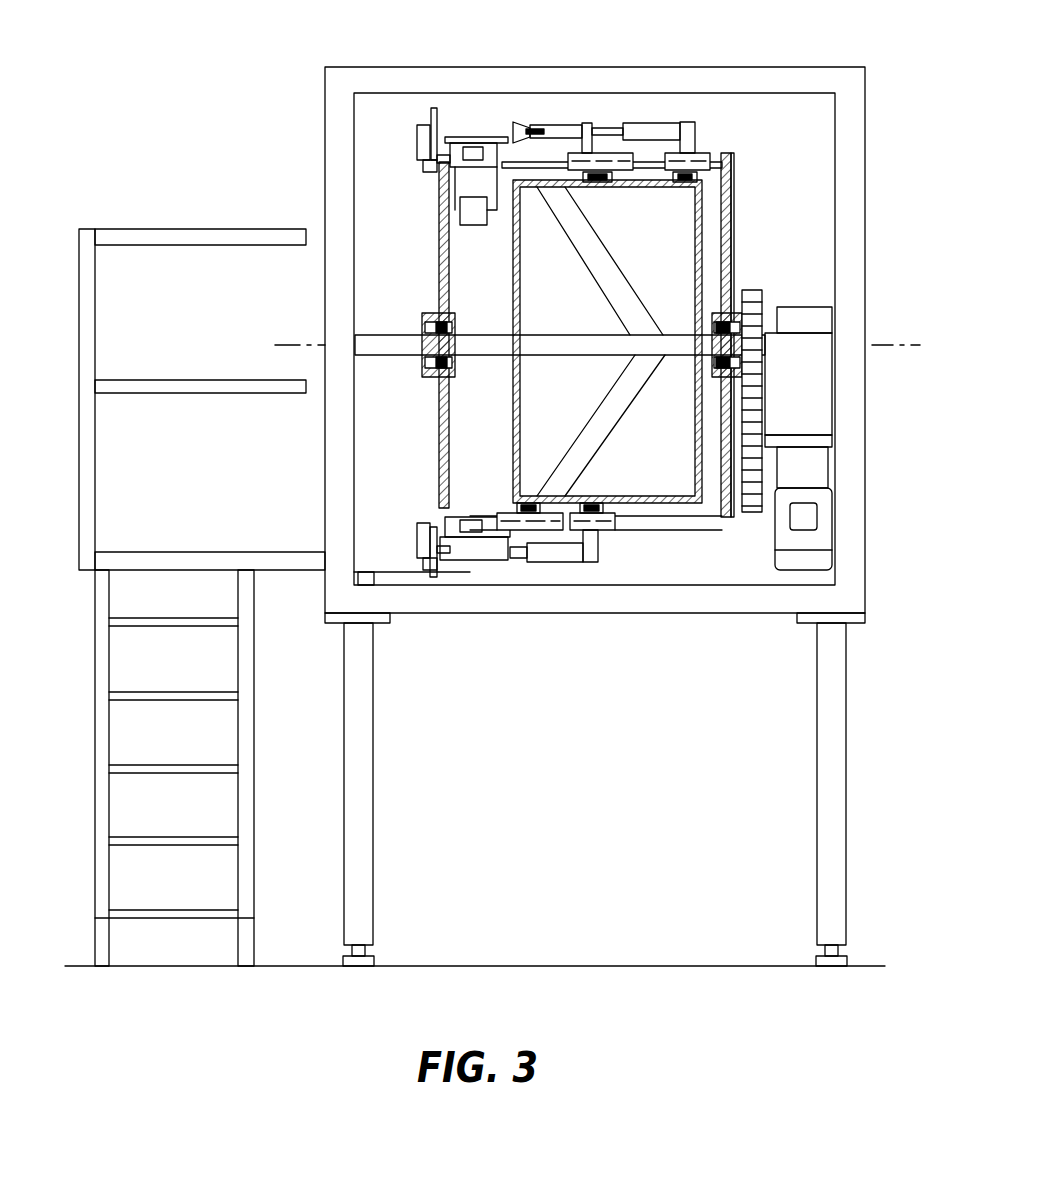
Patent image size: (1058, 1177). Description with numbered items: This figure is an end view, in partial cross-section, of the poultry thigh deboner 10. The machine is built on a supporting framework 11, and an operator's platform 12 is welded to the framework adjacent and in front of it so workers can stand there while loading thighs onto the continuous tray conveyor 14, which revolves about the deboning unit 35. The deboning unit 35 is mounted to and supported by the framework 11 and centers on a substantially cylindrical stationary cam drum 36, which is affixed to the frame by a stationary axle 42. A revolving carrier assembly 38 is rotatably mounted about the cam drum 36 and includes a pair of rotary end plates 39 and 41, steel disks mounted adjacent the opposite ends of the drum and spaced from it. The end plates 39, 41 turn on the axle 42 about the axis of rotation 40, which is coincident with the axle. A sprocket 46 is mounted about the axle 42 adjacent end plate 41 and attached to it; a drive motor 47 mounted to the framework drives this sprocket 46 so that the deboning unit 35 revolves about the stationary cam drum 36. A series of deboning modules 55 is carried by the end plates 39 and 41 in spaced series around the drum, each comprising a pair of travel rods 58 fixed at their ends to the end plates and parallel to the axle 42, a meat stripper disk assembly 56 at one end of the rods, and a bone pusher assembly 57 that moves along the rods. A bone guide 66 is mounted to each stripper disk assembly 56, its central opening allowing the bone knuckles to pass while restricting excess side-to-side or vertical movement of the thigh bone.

The poultry thigh deboner 10 is at (902, 102).
The supporting framework 11 is at (340, 150).
The operator's platform 12 is at (150, 562).
The tray conveyor 14 is at (475, 136).
The deboning unit 35 is at (590, 385).
The cam drum 36 is at (656, 506).
The carrier assembly 38 is at (736, 211).
The end plate 39 is at (438, 225).
The axis of rotation 40 is at (276, 344).
The end plate 41 is at (732, 252).
The stationary axle 42 is at (398, 330).
The sprocket 46 is at (756, 302).
The drive motor 47 is at (820, 536).
The deboning module 55 is at (594, 344).
The meat stripper disk assembly 56 is at (430, 150).
The bone pusher assembly 57 is at (640, 122).
The travel rods 58 is at (642, 170).
The bone guide 66 is at (418, 148).